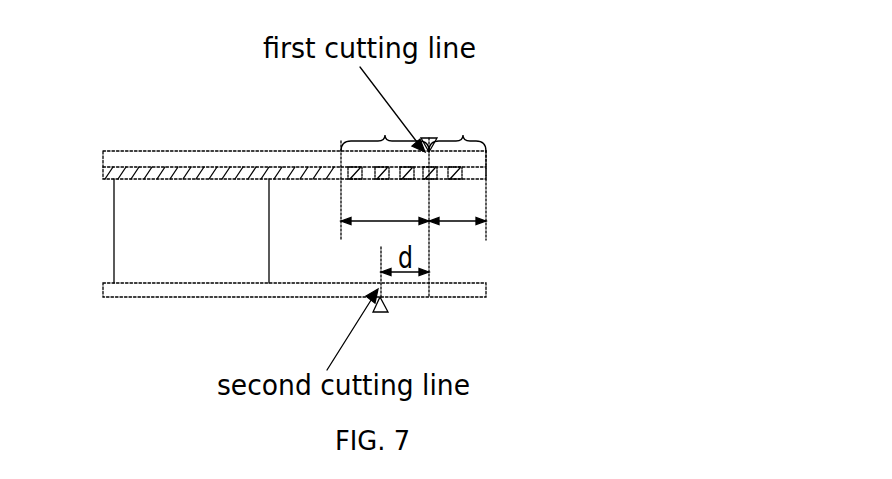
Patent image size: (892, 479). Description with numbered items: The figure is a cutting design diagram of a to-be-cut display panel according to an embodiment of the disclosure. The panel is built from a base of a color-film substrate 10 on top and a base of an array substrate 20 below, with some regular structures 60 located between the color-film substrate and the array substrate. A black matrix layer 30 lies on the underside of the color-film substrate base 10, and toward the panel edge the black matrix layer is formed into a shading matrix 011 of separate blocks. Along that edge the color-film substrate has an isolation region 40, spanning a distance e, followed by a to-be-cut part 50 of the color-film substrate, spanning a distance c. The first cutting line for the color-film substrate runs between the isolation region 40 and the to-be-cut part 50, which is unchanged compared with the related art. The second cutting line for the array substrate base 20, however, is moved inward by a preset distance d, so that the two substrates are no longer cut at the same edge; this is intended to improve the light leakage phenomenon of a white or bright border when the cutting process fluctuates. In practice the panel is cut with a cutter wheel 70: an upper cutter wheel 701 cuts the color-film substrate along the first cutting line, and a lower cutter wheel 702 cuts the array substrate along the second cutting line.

The base of a color-film substrate 10 is at (193, 162).
The base of an array substrate 20 is at (165, 288).
The black matrix layer 30 is at (287, 168).
The isolation region 40 is at (385, 172).
The to-be-cut part of the color-film substrate 50 is at (457, 172).
The regular structures between the color-film substrate and the array substrate 60 is at (130, 255).
The cutter wheel 70 is at (549, 198).
The upper cutter wheel 701 is at (505, 110).
The lower cutter wheel 702 is at (388, 311).
The shading matrix 011 is at (435, 175).